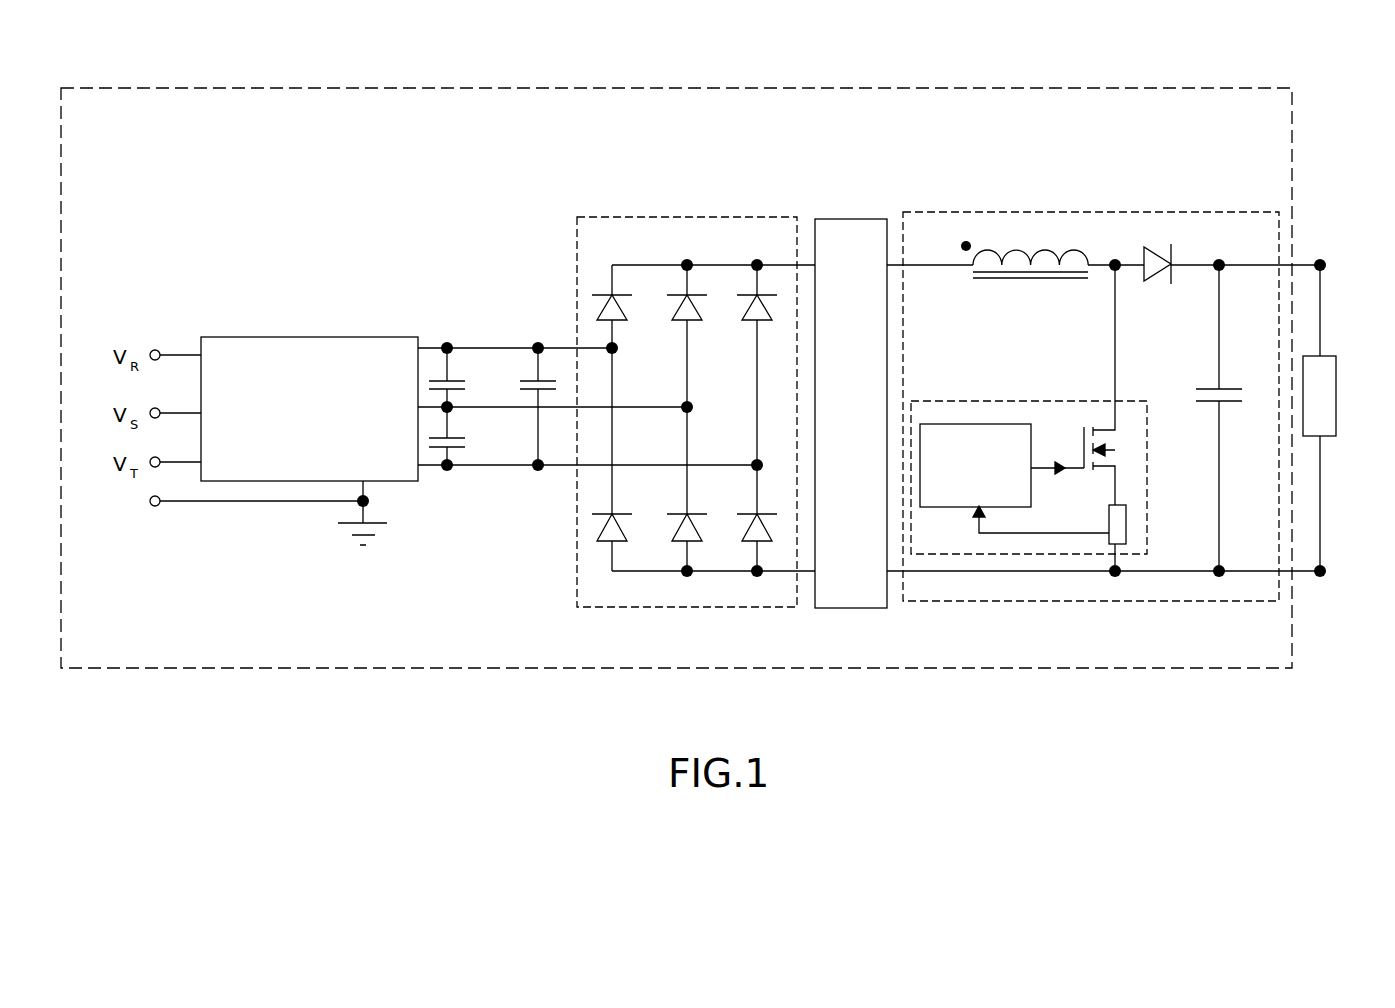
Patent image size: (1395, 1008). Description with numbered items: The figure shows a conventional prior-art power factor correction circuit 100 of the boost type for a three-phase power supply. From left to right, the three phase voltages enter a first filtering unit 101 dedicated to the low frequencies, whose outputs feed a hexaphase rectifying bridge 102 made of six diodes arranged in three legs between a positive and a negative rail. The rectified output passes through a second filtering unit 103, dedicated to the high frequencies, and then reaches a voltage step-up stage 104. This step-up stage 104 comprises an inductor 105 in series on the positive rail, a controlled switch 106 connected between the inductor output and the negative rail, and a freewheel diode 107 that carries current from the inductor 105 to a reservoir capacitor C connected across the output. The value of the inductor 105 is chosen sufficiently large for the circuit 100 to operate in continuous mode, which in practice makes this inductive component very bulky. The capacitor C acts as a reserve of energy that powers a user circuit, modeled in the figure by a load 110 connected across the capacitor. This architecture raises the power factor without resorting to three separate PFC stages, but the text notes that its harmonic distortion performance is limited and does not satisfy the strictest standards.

The correction circuit 100 is at (207, 88).
The first filtering unit 101 is at (273, 337).
The hexaphase rectifying bridge 102 is at (665, 217).
The second filtering unit 103 is at (877, 222).
The voltage step-up stage 104 is at (1003, 603).
The inductor 105 is at (1040, 250).
The controlled switch 106 is at (1007, 401).
The freewheel diode 107 is at (1171, 253).
The load 110 is at (1337, 419).